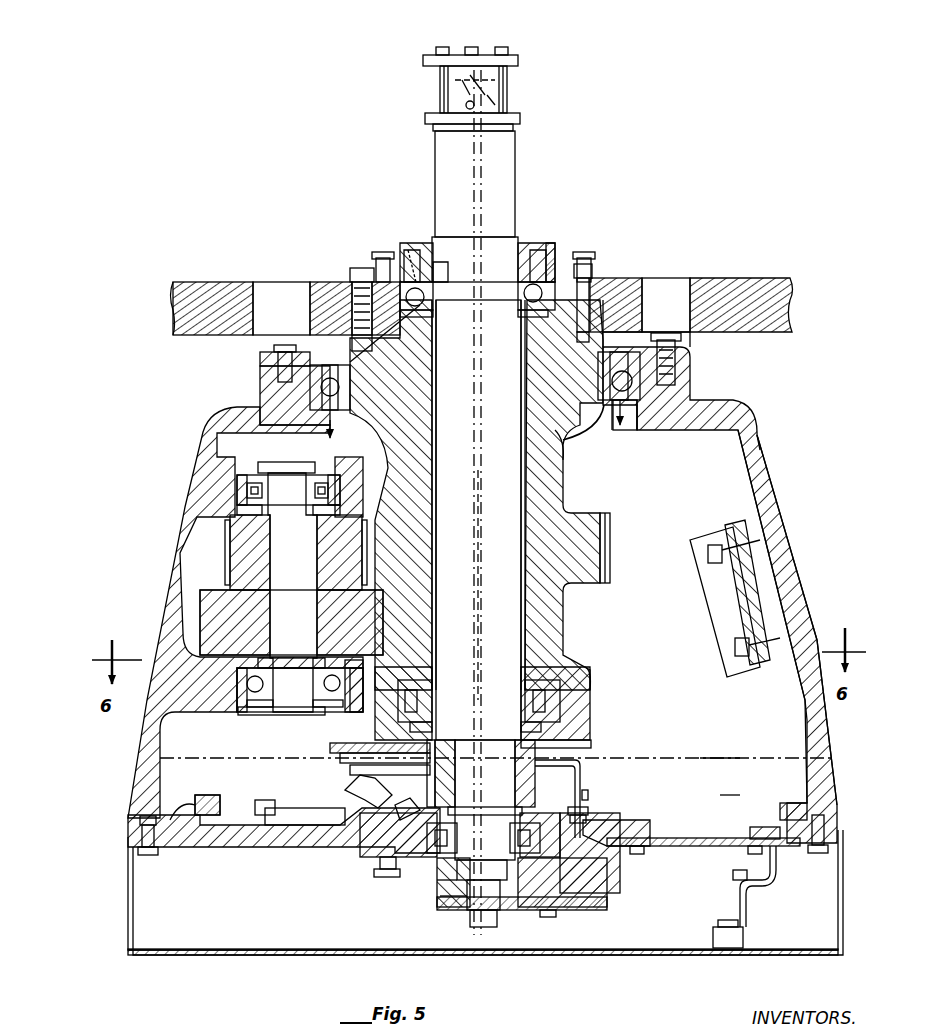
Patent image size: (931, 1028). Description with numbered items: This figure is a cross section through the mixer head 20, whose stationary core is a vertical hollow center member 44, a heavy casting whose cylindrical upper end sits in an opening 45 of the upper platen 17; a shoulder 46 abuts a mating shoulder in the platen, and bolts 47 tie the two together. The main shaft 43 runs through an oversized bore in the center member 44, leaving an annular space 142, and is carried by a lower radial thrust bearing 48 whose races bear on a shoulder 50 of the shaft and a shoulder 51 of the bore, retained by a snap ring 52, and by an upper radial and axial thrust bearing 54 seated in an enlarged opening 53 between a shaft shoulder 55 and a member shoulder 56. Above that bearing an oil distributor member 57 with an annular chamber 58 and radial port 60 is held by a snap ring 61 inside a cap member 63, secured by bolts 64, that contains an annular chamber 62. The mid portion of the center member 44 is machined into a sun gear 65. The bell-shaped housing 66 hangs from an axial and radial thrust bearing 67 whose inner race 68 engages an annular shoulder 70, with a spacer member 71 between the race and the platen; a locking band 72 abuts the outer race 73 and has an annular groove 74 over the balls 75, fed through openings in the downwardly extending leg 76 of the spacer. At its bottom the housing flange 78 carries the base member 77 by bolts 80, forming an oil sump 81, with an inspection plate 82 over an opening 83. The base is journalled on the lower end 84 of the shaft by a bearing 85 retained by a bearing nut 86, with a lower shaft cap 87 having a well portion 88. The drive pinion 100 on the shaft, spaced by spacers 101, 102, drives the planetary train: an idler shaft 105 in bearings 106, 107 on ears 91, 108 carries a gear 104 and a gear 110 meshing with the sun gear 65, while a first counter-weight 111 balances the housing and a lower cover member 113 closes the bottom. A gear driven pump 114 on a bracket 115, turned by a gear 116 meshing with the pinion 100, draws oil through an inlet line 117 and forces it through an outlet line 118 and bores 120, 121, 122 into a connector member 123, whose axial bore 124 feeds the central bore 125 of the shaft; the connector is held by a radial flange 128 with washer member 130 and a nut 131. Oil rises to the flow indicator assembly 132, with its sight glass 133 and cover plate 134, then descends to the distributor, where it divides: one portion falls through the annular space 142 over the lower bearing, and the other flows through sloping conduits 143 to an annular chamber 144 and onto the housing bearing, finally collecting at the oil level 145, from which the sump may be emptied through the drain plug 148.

The upper platen member 17 is at (190, 300).
The head 20 is at (762, 468).
The main shaft 43 is at (478, 580).
The vertical hollow center member 44 is at (563, 470).
The opening 45 is at (345, 280).
The shoulder 46 is at (345, 300).
The bolts 47 is at (350, 318).
The lower radial thrust bearing 48 is at (548, 700).
The shoulder 50 is at (460, 690).
The shoulder 51 is at (575, 690).
The snap ring 52 is at (560, 722).
The enlarged opening 53 is at (405, 350).
The radial and axial thrust bearing 54 is at (520, 317).
The shoulder 55 is at (445, 300).
The shoulder 56 is at (540, 345).
The oil distributor member 57 is at (525, 243).
The annular chamber 58 is at (440, 270).
The radial port 60 is at (412, 262).
The snap ring 61 is at (495, 237).
The annular chamber 62 is at (538, 262).
The cap member 63 is at (552, 250).
The bolts 64 is at (383, 252).
The sun gear 65 is at (610, 548).
The housing member 66 is at (765, 502).
The axial and radial thrust bearing 67 is at (690, 390).
The inner race 68 is at (583, 440).
The annular shoulder 70 is at (612, 435).
The spacer member 71 is at (615, 300).
The annular locking band 72 is at (680, 360).
The outer race 73 is at (650, 430).
The annular groove 74 is at (615, 325).
The balls 75 is at (622, 410).
The downwardly extending leg 76 is at (620, 318).
The base member 77 is at (262, 830).
The flange 78 is at (178, 805).
The bolts 80 is at (150, 858).
The oil sump 81 is at (728, 790).
The inspection or cleaning plate 82 is at (700, 848).
The opening 83 is at (720, 838).
The lower end of main shaft 84 is at (395, 868).
The radial thrust bearing 85 is at (405, 800).
The bearing nut 86 is at (432, 890).
The lower shaft cap 87 is at (440, 882).
The well portion 88 is at (455, 898).
The ear 91 is at (212, 505).
The drive pinion 100 is at (535, 755).
The spacer 101 is at (590, 745).
The spacer 102 is at (608, 788).
The gear 104 is at (215, 615).
The idler shaft 105 is at (292, 592).
The bearing 106 is at (250, 718).
The bearing 107 is at (238, 487).
The upper ear 108 is at (205, 713).
The gear 110 is at (240, 555).
The first counter-weight 111 is at (760, 590).
The lower cover member 113 is at (640, 955).
The gear driven pump 114 is at (345, 788).
The bracket 115 is at (365, 770).
The gear 116 is at (340, 712).
The inlet line 117 is at (270, 810).
The outlet line 118 is at (590, 770).
The bore 120 is at (588, 812).
The bore 121 is at (580, 878).
The transverse bore 122 is at (550, 912).
The connector member 123 is at (470, 920).
The axial bore 124 is at (485, 818).
The central bore 125 is at (488, 478).
The radial flange 128 is at (525, 855).
The washer member 130 is at (505, 890).
The nut 131 is at (478, 927).
The flow indicator assembly 132 is at (512, 82).
The transparent cylinder sight glass 133 is at (450, 101).
The cover plate 134 is at (470, 57).
The annular space 142 is at (436, 440).
The downwardly sloping conduits 143 is at (345, 375).
The annular chamber 144 is at (350, 387).
The oil level 145 is at (712, 745).
The drain plug 148 is at (745, 950).